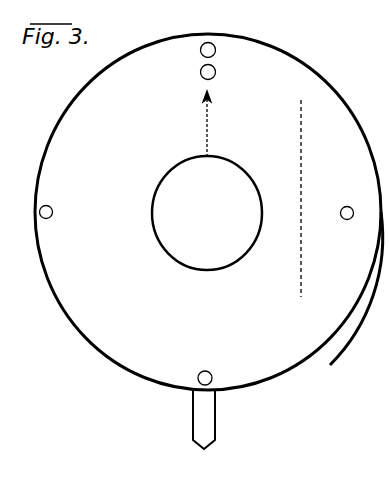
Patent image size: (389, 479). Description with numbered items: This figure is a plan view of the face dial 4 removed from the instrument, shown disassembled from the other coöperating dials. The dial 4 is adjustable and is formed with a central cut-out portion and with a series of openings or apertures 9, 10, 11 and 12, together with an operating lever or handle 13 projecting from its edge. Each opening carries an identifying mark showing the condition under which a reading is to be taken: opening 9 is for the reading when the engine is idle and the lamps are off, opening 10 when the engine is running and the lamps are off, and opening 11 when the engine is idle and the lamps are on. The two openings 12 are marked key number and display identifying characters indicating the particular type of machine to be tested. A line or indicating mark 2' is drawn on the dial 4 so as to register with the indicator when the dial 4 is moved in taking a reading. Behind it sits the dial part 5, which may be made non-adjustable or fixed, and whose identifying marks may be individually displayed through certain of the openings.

The indicating mark 2' is at (207, 180).
The dial 4 is at (318, 92).
The dial part 5 is at (357, 288).
The opening 9 is at (198, 386).
The opening 10 is at (39, 212).
The opening 11 is at (340, 213).
The openings 12 is at (200, 50).
The operating lever 13 is at (213, 438).